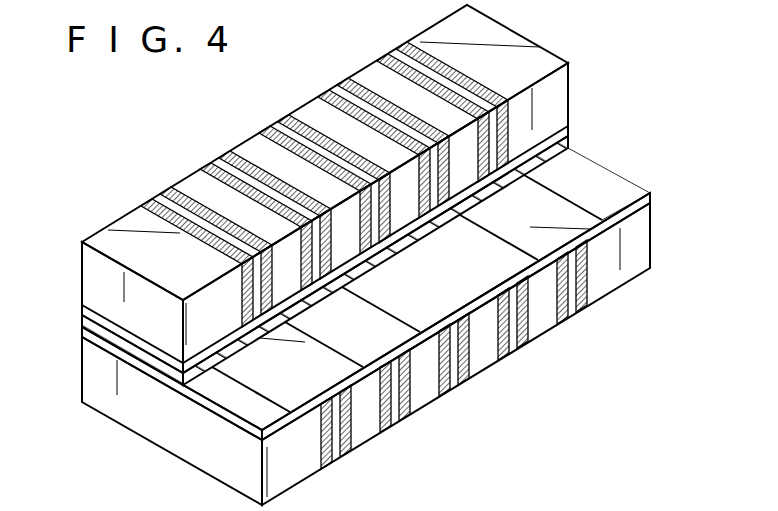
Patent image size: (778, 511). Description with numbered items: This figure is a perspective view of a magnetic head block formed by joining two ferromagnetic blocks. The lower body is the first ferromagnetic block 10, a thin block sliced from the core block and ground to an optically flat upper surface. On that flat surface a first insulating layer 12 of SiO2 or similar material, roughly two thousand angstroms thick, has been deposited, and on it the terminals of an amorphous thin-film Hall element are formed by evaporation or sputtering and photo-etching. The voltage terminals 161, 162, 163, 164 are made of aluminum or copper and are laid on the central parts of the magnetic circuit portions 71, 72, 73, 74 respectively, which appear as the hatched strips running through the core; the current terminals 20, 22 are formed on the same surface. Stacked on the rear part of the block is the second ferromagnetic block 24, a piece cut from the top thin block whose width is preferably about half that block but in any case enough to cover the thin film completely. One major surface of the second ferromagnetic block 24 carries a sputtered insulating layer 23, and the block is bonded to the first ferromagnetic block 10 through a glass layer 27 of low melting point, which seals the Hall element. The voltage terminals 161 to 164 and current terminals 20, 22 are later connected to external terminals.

The first ferromagnetic block 10 is at (137, 410).
The first insulating layer 12 is at (82, 340).
The current terminal 20 is at (592, 193).
The current terminal 22 is at (270, 398).
The insulating layer 23 is at (82, 312).
The second ferromagnetic block 24 is at (95, 265).
The glass layer 27 is at (84, 322).
The magnetic circuit portion 71 is at (367, 77).
The magnetic circuit portion 72 is at (317, 118).
The magnetic circuit portion 73 is at (253, 155).
The magnetic circuit portion 74 is at (198, 190).
The voltage terminal 161 is at (517, 240).
The voltage terminal 162 is at (455, 278).
The voltage terminal 163 is at (402, 318).
The voltage terminal 164 is at (337, 357).